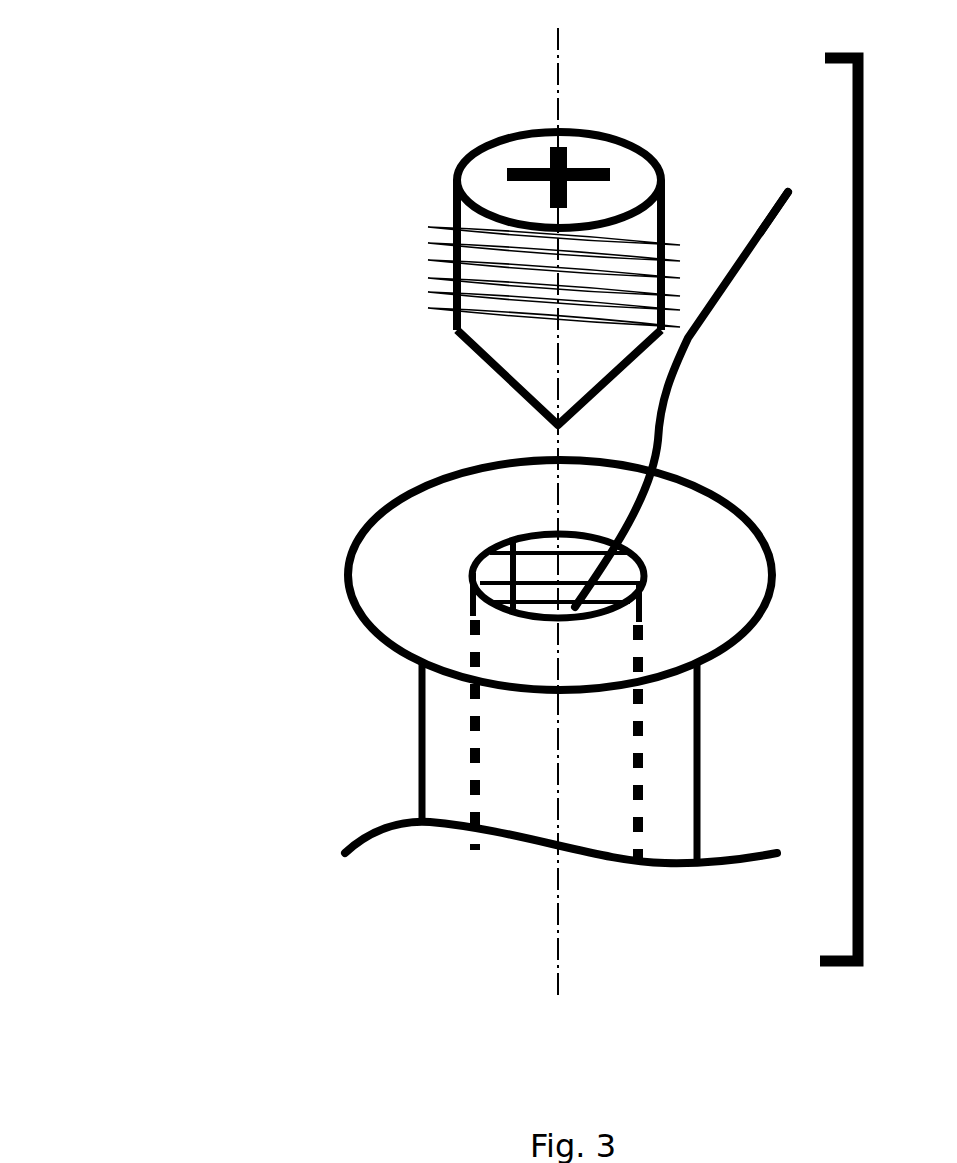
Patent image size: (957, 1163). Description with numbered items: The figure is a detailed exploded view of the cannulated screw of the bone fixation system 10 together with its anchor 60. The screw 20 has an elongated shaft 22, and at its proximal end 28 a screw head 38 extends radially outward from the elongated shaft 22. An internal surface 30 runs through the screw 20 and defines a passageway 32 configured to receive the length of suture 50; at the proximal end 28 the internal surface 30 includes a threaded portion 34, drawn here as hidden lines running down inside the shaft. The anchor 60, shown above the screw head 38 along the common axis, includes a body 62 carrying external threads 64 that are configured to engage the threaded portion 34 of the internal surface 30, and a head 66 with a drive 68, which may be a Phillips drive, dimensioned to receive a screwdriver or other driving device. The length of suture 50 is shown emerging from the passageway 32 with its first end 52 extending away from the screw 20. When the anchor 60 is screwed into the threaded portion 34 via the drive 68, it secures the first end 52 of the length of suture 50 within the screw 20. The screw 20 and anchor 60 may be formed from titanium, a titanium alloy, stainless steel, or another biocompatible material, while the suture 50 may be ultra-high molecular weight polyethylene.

The bone fixation system 10 is at (123, 200).
The screw 20 is at (122, 772).
The elongated shaft 22 is at (417, 745).
The proximal end 28 is at (228, 502).
The internal surface 30 is at (475, 558).
The passageway 32 is at (522, 510).
The threaded portion 34 is at (472, 597).
The screw head 38 is at (733, 645).
The length of suture 50 is at (775, 217).
The first end 52 is at (747, 205).
The anchor 60 is at (347, 162).
The body 62 is at (453, 208).
The external threads 64 is at (443, 288).
The head 66 is at (495, 157).
The drive 68 is at (580, 167).